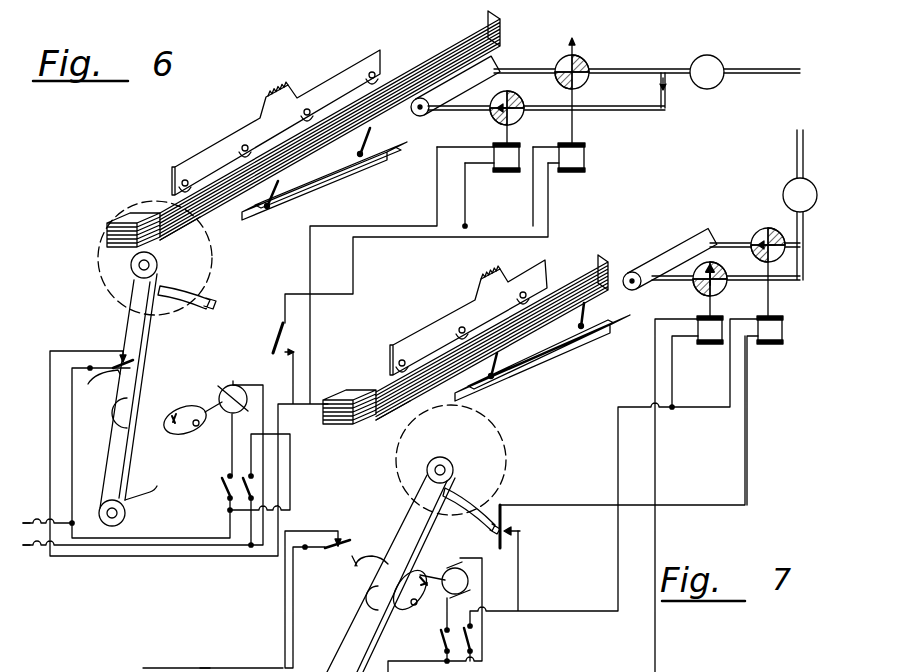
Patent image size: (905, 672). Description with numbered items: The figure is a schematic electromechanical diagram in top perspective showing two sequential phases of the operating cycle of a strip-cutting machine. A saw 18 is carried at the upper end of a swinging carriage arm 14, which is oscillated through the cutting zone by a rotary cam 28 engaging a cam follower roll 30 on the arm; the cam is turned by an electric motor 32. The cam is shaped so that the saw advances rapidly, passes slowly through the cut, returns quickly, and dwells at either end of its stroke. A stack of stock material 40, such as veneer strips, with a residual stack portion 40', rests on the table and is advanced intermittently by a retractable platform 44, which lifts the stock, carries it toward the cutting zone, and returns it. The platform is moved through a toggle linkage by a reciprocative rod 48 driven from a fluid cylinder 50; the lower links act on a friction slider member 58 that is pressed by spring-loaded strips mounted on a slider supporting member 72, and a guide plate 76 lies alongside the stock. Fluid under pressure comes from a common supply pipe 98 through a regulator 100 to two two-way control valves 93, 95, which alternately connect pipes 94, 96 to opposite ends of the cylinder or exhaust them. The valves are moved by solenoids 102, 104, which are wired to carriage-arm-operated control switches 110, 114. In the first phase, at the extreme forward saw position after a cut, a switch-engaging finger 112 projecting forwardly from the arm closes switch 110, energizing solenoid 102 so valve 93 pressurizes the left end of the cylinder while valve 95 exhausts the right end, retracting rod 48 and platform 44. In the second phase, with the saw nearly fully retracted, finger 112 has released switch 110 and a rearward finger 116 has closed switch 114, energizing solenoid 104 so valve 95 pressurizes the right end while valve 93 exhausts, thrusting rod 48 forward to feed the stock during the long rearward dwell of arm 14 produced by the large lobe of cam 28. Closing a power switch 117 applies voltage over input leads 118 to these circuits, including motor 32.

In FIG. 6, the swinging carriage arm 14 is at (136, 333).
In FIG. 7, the swinging carriage arm 14 is at (405, 532).
In FIG. 6, the saw 18 is at (203, 268).
In FIG. 7, the saw 18 is at (493, 445).
In FIG. 6, the rotary cam 28 is at (182, 405).
In FIG. 7, the rotary cam 28 is at (437, 565).
In FIG. 6, the cam follower roll 30 is at (118, 418).
In FIG. 7, the cam follower roll 30 is at (372, 596).
In FIG. 6, the electric motor 32 is at (230, 387).
In FIG. 7, the electric motor 32 is at (468, 581).
In FIG. 6, the stack of stock material 40 is at (330, 125).
In FIG. 7, the stack of stock material 40 is at (492, 325).
In FIG. 6, the stack of stock material 40' is at (126, 216).
In FIG. 7, the stack of stock material 40' is at (349, 424).
In FIG. 6, the retractable platform 44 is at (200, 214).
In FIG. 7, the retractable platform 44 is at (432, 386).
In FIG. 6, the reciprocative rod 48 is at (373, 137).
In FIG. 7, the reciprocative rod 48 is at (562, 330).
In FIG. 6, the fluid cylinder 50 is at (494, 62).
In FIG. 7, the fluid cylinder 50 is at (684, 240).
In FIG. 6, the friction slider member 58 is at (340, 168).
In FIG. 7, the friction slider member 58 is at (600, 324).
In FIG. 6, the slider supporting member 72 is at (332, 194).
In FIG. 7, the slider supporting member 72 is at (536, 380).
In FIG. 6, the guide plate 76 is at (212, 151).
In FIG. 7, the guide plate 76 is at (441, 326).
In FIG. 6, the two-way control valve 93 is at (521, 100).
In FIG. 7, the two-way control valve 93 is at (724, 292).
In FIG. 6, the pipe 94 is at (522, 70).
In FIG. 7, the pipe 94 is at (737, 243).
In FIG. 6, the two-way control valve 95 is at (583, 60).
In FIG. 7, the two-way control valve 95 is at (763, 226).
In FIG. 6, the pipe 96 is at (462, 110).
In FIG. 7, the pipe 96 is at (676, 281).
In FIG. 6, the common supply pipe 98 is at (747, 68).
In FIG. 7, the common supply pipe 98 is at (797, 152).
In FIG. 6, the regulator 100 is at (710, 56).
In FIG. 7, the regulator 100 is at (789, 181).
In FIG. 6, the solenoid 102 is at (517, 155).
In FIG. 7, the solenoid 102 is at (707, 335).
In FIG. 6, the solenoid 104 is at (580, 152).
In FIG. 7, the solenoid 104 is at (773, 334).
In FIG. 6, the control switch 110 is at (110, 364).
In FIG. 7, the control switch 110 is at (338, 545).
In FIG. 6, the switch-engaging finger 112 is at (100, 382).
In FIG. 7, the switch-engaging finger 112 is at (365, 565).
In FIG. 6, the control switch 114 is at (300, 348).
In FIG. 7, the control switch 114 is at (507, 524).
In FIG. 6, the finger 116 is at (215, 306).
In FIG. 7, the finger 116 is at (494, 503).
In FIG. 6, the power switch 117 is at (227, 490).
In FIG. 7, the power switch 117 is at (446, 648).
In FIG. 6, the input leads 118 is at (37, 528).
In FIG. 7, the input leads 118 is at (213, 669).